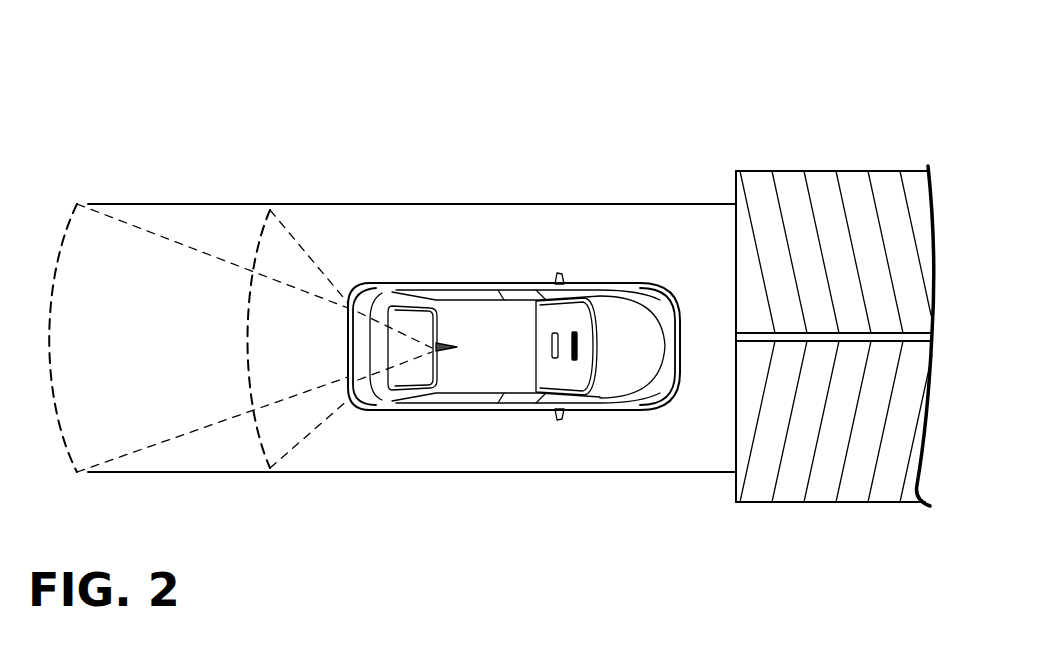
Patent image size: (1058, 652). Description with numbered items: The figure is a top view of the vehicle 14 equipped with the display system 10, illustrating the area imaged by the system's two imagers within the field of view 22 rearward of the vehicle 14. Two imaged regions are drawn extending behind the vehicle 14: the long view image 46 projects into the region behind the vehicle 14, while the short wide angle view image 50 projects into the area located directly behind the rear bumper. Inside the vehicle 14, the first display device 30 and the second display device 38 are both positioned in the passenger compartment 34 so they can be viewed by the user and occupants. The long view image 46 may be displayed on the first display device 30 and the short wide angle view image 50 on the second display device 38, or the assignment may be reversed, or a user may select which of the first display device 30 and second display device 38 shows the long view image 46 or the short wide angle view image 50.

The display system 10 is at (293, 284).
The vehicle 14 is at (521, 266).
The field of view 22 is at (418, 95).
The first display device 30 is at (557, 352).
The passenger compartment 34 is at (491, 362).
The second display device 38 is at (577, 350).
The long view image 46 is at (58, 252).
The short wide angle view image 50 is at (258, 243).